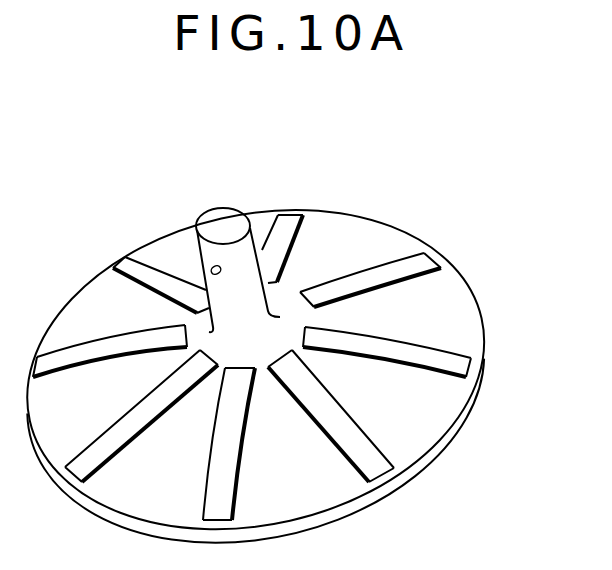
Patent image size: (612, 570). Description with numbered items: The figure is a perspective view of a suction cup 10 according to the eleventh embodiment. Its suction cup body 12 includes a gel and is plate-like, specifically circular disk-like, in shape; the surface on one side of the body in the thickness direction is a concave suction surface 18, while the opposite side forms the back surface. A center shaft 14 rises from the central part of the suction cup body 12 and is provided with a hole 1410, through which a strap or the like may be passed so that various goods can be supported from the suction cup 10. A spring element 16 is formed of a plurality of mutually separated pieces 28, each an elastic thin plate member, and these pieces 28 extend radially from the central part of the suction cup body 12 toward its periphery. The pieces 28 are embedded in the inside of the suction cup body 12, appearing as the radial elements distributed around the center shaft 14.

The suction cup 10 is at (186, 170).
The suction cup body 12 is at (434, 307).
The center shaft 14 is at (197, 247).
The hole 1410 is at (212, 270).
The spring element 16 is at (361, 448).
The suction surface 18 is at (368, 510).
The piece 28 is at (393, 270).